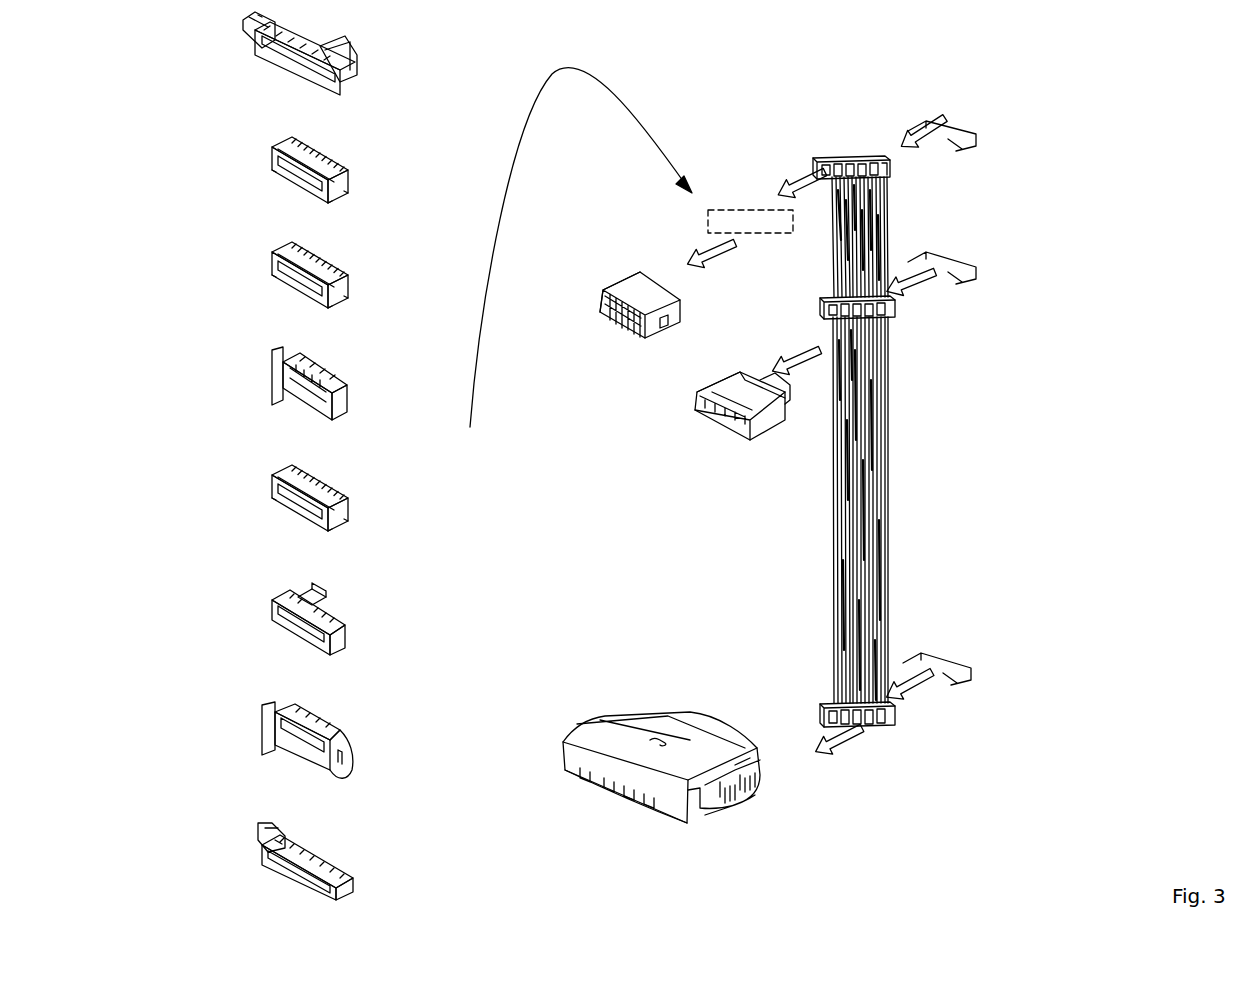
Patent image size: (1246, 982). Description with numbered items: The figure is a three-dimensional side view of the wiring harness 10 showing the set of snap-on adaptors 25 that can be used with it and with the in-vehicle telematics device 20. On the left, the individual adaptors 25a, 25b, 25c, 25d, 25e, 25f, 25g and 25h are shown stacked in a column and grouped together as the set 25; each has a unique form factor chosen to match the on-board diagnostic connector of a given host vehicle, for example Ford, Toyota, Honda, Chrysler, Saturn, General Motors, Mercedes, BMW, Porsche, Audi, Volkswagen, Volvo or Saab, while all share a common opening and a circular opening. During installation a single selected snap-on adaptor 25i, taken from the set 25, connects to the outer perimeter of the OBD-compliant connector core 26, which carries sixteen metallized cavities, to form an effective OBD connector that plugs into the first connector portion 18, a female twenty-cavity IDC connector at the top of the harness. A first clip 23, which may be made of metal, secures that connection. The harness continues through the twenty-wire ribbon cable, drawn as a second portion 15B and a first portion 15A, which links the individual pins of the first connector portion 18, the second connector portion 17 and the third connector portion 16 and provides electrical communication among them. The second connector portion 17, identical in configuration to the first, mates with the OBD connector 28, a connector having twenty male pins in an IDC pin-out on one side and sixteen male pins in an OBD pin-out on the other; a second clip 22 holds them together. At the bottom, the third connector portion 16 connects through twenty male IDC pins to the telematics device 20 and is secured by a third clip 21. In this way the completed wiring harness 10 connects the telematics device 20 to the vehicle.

The wiring harness 10 is at (1102, 312).
The first portion of ribbon cable 15A is at (885, 475).
The second portion of ribbon cable 15B is at (885, 223).
The third connector portion 16 is at (890, 725).
The second connector portion 17 is at (892, 315).
The first connector portion 18 is at (830, 158).
The in-vehicle telematics device 20 is at (665, 817).
The third clip 21 is at (970, 680).
The second clip 22 is at (970, 277).
The first clip 23 is at (950, 122).
The set of snap-on adaptors 25 is at (384, 44).
The snap-on adaptor 25a is at (290, 83).
The snap-on adaptor 25b is at (298, 188).
The snap-on adaptor 25c is at (290, 288).
The snap-on adaptor 25d is at (292, 403).
The snap-on adaptor 25e is at (300, 517).
The snap-on adaptor 25f is at (288, 637).
The snap-on adaptor 25g is at (290, 752).
The snap-on adaptor 25h is at (287, 878).
The selected snap-on adaptor 25i is at (746, 210).
The connector core 26 is at (618, 277).
The OBD connector 28 is at (708, 417).